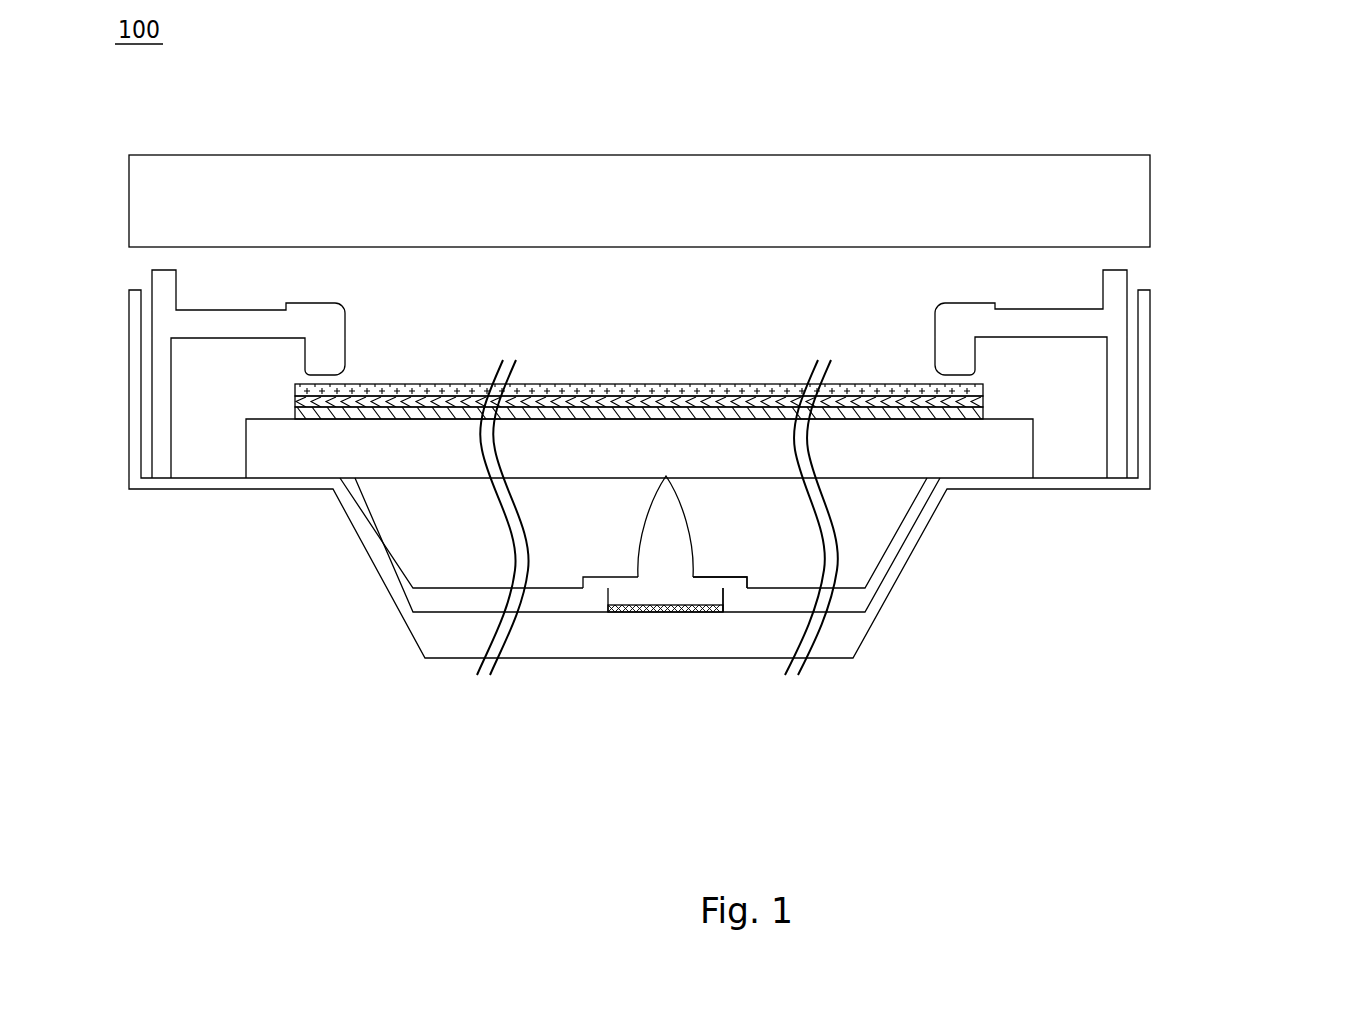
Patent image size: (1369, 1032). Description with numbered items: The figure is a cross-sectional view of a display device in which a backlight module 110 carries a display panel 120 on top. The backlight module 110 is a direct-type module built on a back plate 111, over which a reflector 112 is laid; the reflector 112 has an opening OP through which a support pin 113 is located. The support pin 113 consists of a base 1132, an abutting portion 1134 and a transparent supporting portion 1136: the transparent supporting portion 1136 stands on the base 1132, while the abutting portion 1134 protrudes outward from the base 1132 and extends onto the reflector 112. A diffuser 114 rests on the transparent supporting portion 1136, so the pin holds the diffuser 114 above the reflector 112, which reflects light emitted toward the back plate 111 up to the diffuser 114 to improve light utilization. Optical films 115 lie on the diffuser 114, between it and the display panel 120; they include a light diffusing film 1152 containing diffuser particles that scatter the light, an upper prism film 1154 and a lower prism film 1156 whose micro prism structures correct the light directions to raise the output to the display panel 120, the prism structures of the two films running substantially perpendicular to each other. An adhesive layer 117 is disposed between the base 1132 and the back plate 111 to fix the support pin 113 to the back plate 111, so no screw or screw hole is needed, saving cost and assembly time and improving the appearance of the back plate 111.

The backlight module 110 is at (741, 544).
The back plate 111 is at (840, 638).
The reflector 112 is at (848, 600).
The support pin 113 is at (666, 647).
The base 1132 is at (666, 585).
The abutting portion 1134 is at (736, 583).
The transparent supporting portion 1136 is at (657, 528).
The diffuser 114 is at (992, 452).
The optical films 115 is at (824, 392).
The light diffusing film 1152 is at (983, 392).
The upper prism film 1154 is at (983, 403).
The lower prism film 1156 is at (983, 414).
The adhesive layer 117 is at (712, 607).
The display panel 120 is at (1125, 197).
The opening OP is at (593, 602).